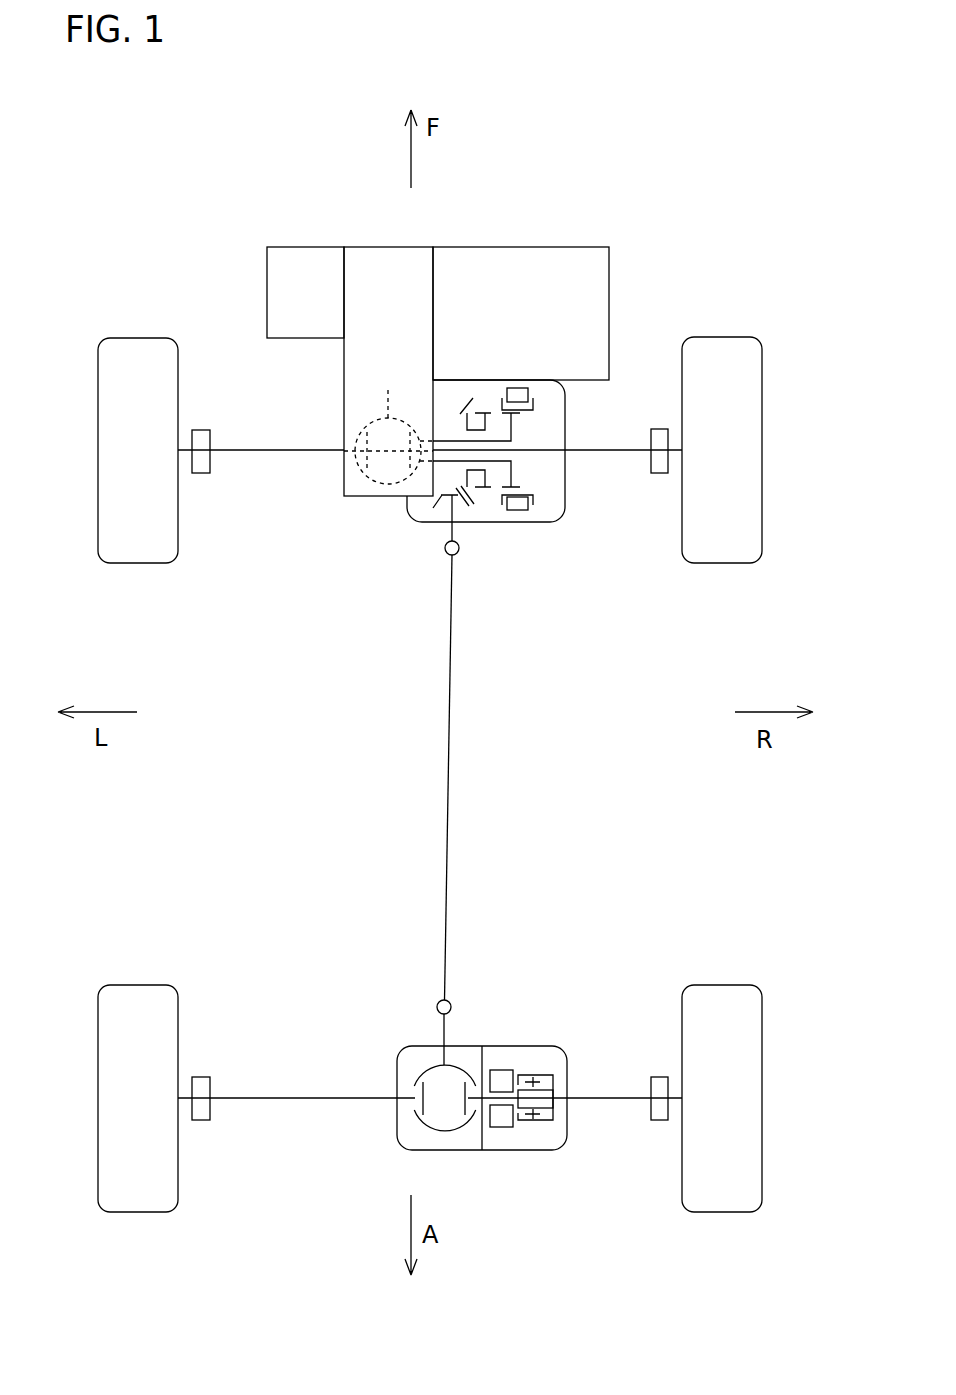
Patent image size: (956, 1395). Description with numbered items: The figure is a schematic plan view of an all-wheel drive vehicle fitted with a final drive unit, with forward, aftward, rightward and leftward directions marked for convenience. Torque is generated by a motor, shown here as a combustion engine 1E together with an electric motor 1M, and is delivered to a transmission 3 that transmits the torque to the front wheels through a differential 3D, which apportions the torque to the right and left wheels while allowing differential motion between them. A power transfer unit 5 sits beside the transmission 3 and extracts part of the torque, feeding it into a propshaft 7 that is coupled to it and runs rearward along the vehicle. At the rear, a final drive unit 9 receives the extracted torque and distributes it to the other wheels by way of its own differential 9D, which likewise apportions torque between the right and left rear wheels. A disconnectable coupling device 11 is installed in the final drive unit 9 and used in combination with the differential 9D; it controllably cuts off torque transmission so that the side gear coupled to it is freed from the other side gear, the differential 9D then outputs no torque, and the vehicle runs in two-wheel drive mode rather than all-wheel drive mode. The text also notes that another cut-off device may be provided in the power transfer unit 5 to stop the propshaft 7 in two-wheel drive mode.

The electric motor 1M is at (303, 247).
The combustion engine 1E is at (517, 247).
The transmission 3 is at (384, 247).
The differential 3D is at (365, 421).
The power transfer unit 5 is at (528, 552).
The propshaft 7 is at (448, 768).
The final drive unit 9 is at (512, 980).
The differential 9D is at (423, 1067).
The disconnectable coupling device 11 is at (524, 1142).